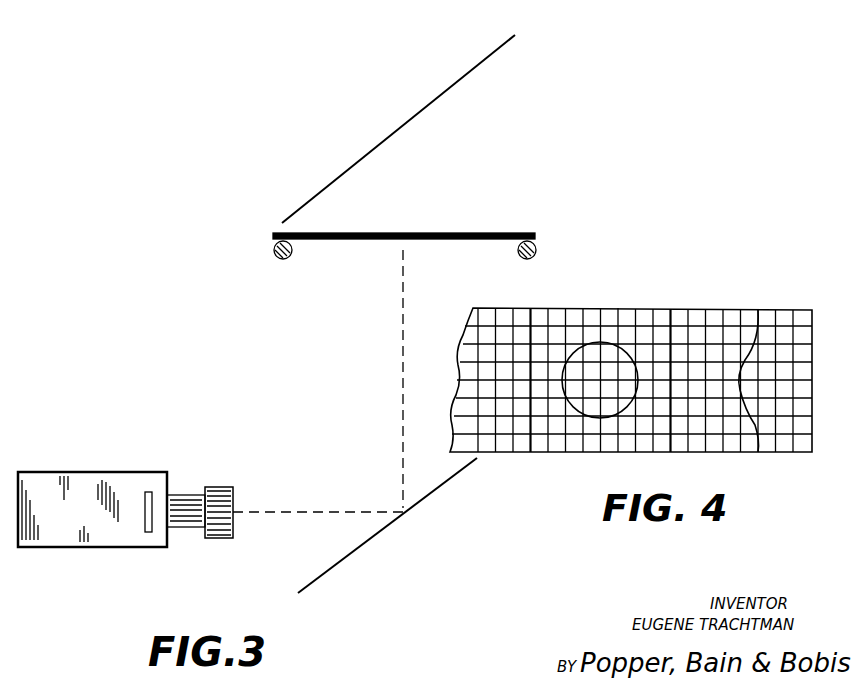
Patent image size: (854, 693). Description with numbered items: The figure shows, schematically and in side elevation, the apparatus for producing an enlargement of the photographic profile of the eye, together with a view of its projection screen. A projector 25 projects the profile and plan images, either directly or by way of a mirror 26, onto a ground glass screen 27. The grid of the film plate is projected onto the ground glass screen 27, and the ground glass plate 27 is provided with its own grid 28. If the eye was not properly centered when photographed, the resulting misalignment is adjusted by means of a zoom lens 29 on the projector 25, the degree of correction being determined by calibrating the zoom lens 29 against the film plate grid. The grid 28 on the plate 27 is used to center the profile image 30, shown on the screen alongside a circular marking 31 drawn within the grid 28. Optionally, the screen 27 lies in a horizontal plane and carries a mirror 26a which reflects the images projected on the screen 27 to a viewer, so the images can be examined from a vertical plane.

In FIG. 3, the projector 25 is at (82, 492).
In FIG. 3, the mirror 26 is at (423, 513).
In FIG. 3, the mirror 26a is at (407, 127).
In FIG. 3, the ground glass screen 27 is at (457, 233).
In FIG. 4, the ground glass screen 27 is at (642, 322).
In FIG. 4, the grid 28 is at (471, 332).
In FIG. 3, the zoom lens 29 is at (223, 505).
In FIG. 4, the profile image 30 is at (757, 425).
In FIG. 4, the circle 31 is at (597, 418).